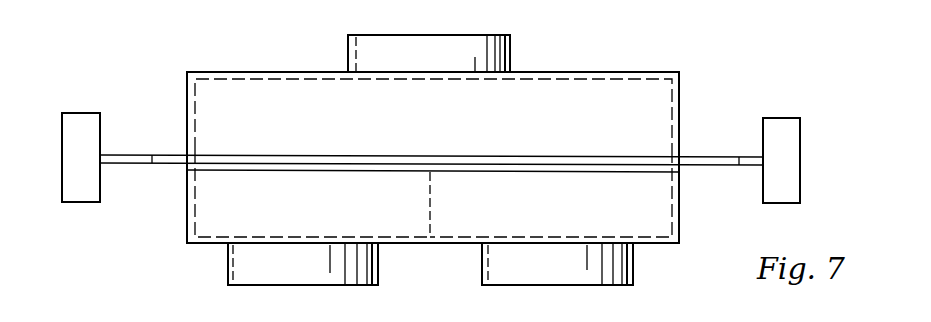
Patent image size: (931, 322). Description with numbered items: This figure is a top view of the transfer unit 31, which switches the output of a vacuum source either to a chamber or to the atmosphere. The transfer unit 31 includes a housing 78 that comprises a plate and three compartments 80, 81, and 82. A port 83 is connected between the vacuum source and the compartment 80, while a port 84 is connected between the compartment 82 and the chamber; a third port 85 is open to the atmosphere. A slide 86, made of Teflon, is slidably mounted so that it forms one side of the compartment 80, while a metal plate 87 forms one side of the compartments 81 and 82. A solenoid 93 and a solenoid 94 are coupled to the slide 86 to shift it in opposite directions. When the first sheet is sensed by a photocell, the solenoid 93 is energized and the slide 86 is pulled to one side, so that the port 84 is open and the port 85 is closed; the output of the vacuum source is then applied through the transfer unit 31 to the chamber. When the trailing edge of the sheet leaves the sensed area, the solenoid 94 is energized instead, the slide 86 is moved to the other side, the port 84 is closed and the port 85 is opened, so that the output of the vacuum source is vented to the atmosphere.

The transfer unit 31 is at (749, 59).
The housing 78 is at (243, 71).
The compartment 80 is at (671, 97).
The compartment 81 is at (671, 197).
The compartment 82 is at (197, 212).
The port 83 is at (348, 52).
The port 84 is at (228, 272).
The port 85 is at (636, 272).
The slide 86 is at (334, 155).
The metal plate 87 is at (582, 173).
The solenoid 93 is at (801, 164).
The solenoid 94 is at (61, 158).